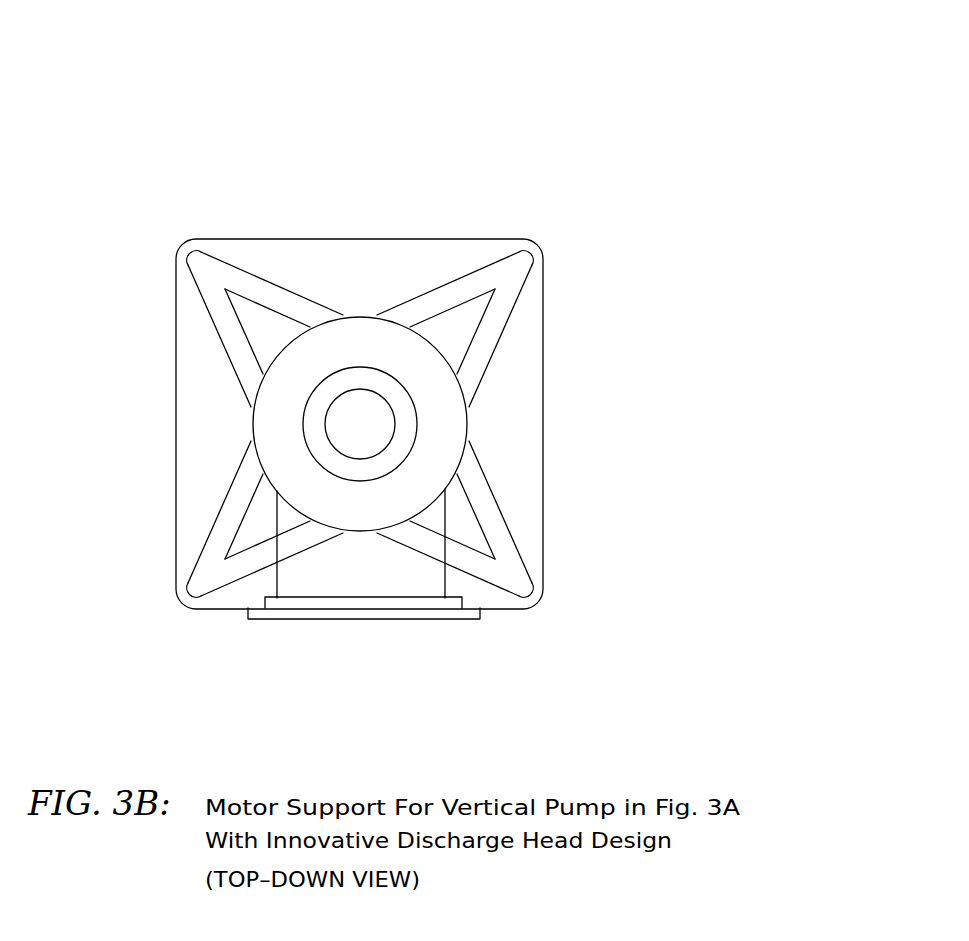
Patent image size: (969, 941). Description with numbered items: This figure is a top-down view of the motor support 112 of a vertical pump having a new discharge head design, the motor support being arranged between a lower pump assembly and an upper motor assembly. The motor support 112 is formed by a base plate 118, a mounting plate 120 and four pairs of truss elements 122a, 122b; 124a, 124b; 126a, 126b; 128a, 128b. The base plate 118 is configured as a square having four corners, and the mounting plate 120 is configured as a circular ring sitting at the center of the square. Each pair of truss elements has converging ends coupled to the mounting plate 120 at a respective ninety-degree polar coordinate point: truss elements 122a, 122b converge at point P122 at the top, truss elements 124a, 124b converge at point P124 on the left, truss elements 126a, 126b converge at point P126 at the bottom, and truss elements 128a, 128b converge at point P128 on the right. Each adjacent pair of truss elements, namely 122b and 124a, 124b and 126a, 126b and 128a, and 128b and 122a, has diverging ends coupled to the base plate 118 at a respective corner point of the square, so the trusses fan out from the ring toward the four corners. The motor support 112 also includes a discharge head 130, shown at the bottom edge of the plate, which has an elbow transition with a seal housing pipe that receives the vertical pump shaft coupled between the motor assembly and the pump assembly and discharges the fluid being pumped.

The motor support 112 is at (478, 89).
The base plate 118 is at (543, 547).
The mounting plate 120 is at (445, 456).
The truss element 122a is at (450, 283).
The truss element 122b is at (285, 289).
The truss element 124a is at (226, 352).
The truss element 124b is at (225, 500).
The truss element 126a is at (229, 596).
The truss element 126b is at (480, 582).
The truss element 128a is at (503, 508).
The truss element 128b is at (502, 342).
The discharge head 130 is at (446, 622).
The polar coordinate point P122 is at (358, 314).
The polar coordinate point P124 is at (250, 420).
The polar coordinate point P126 is at (358, 534).
The polar coordinate point P128 is at (472, 420).